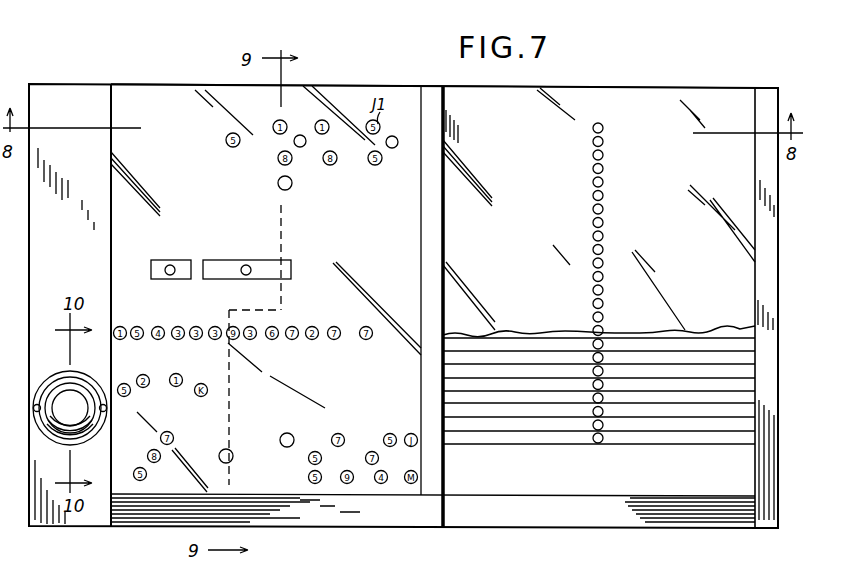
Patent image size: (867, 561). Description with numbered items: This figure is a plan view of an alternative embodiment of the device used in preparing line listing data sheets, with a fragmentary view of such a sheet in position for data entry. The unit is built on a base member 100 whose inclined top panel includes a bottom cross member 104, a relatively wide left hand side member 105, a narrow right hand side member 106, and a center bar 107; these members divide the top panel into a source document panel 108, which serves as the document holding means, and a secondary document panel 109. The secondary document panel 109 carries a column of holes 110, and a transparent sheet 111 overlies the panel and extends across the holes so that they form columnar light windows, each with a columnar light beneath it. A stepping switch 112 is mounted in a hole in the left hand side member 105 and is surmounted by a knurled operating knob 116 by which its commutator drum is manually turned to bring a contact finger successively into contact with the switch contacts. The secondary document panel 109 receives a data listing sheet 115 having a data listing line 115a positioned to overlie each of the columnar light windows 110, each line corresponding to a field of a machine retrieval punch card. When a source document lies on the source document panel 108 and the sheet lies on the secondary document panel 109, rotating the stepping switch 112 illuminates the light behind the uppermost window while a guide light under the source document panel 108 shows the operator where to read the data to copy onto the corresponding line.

The base member 100 is at (648, 70).
The bottom cross member 104 is at (385, 516).
The left hand side member 105 is at (70, 84).
The right hand side member 106 is at (770, 78).
The center bar 107 is at (443, 110).
The source document panel 108 is at (167, 80).
The secondary document panel 109 is at (704, 76).
The column of holes 110 is at (603, 128).
The transparent sheet 111 is at (536, 247).
The stepping switch 112 is at (52, 378).
The data listing sheet 115 is at (530, 310).
The data listing line 115a is at (545, 428).
The knurled operating knob 116 is at (74, 392).